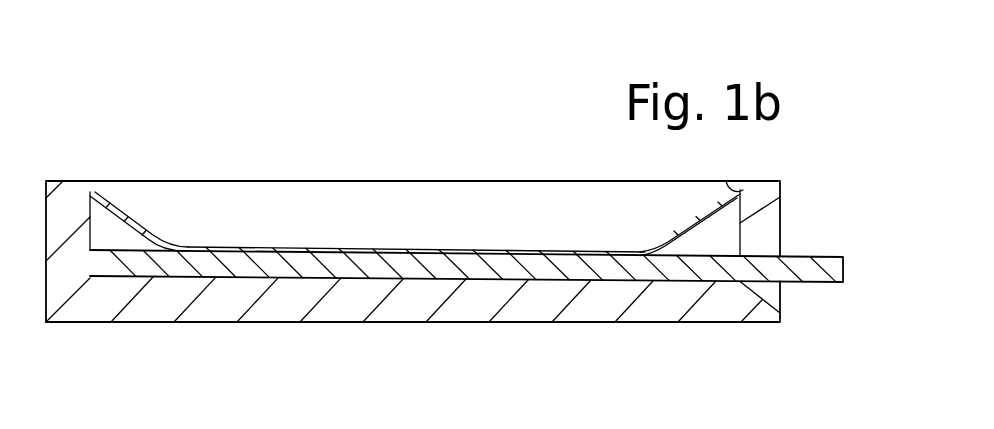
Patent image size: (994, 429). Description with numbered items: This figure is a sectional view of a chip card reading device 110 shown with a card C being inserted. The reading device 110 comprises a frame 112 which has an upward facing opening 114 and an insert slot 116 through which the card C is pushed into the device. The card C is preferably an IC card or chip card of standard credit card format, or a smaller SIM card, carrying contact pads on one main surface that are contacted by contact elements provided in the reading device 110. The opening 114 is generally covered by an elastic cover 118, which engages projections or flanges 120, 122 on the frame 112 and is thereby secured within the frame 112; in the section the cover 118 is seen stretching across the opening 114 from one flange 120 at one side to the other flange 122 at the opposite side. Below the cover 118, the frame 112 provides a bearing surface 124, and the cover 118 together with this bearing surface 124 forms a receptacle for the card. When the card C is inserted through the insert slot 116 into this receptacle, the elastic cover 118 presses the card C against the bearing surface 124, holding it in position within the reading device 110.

The reading device 110 is at (215, 122).
The frame 112 is at (217, 308).
The upward facing opening 114 is at (390, 204).
The insert slot 116 is at (772, 241).
The elastic cover 118 is at (282, 247).
The projection or flange 120 is at (97, 190).
The projection or flange 122 is at (723, 187).
The bearing surface 124 is at (375, 272).
The card C is at (552, 268).